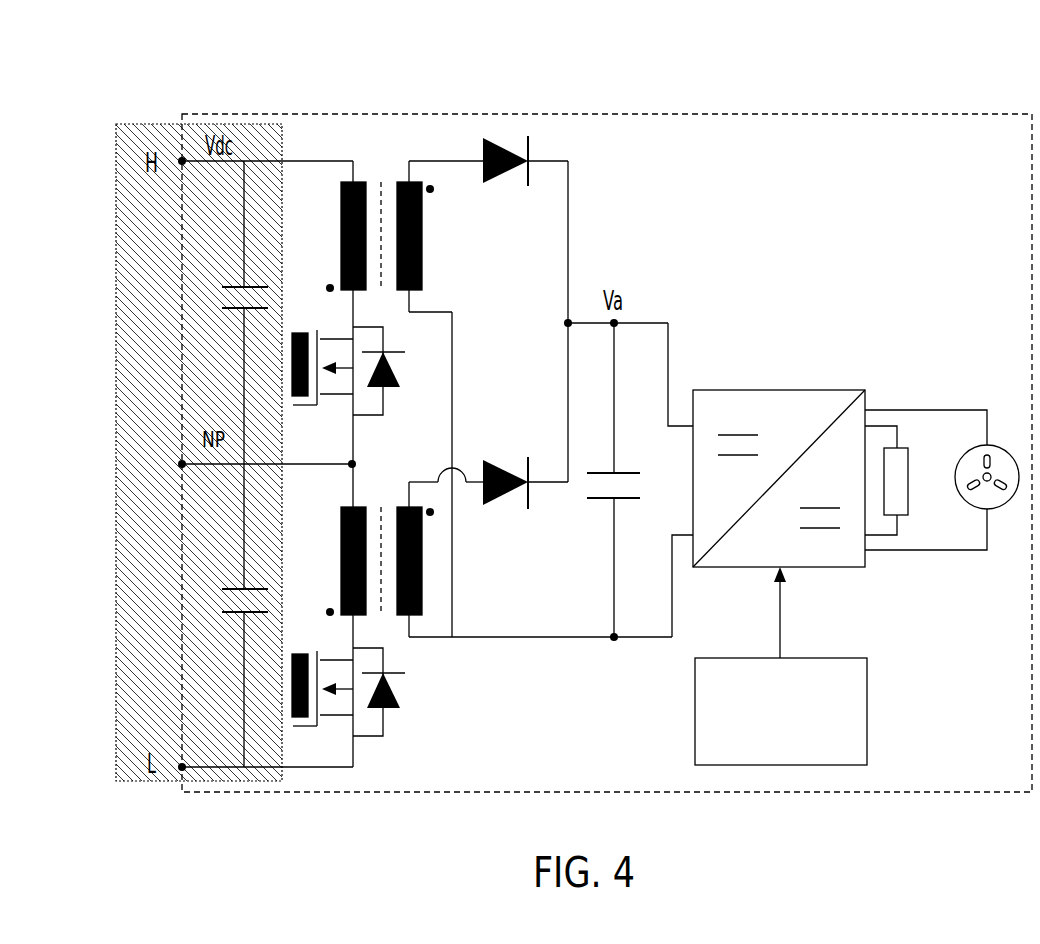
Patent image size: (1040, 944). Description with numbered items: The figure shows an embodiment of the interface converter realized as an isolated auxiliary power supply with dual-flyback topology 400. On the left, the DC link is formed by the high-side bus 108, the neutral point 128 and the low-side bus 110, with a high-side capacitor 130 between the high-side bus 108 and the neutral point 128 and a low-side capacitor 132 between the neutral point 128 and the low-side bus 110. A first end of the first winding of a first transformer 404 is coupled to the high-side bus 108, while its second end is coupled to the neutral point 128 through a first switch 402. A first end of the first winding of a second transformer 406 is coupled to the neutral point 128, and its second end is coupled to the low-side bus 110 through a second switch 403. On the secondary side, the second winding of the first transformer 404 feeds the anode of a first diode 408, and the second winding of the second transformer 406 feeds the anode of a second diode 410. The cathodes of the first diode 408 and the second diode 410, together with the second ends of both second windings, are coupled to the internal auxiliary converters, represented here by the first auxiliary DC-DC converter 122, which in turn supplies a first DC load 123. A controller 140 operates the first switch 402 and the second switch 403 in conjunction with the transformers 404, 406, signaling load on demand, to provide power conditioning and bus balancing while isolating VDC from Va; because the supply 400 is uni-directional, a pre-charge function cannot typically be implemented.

The isolated auxiliary power supply with dual-flyback topology 400 is at (778, 85).
The high-side bus 108 is at (252, 161).
The low-side bus 110 is at (200, 768).
The neutral point 128 is at (182, 464).
The high-side capacitor 130 is at (235, 287).
The low-side capacitor 132 is at (232, 589).
The first transformer 404 is at (356, 182).
The second transformer 406 is at (357, 507).
The first switch 402 is at (298, 406).
The second switch 403 is at (300, 727).
The first diode 408 is at (496, 178).
The second diode 410 is at (490, 503).
The first auxiliary DC-DC converter 122 is at (830, 402).
The first DC load 123 is at (1003, 505).
The controller 140 is at (867, 716).